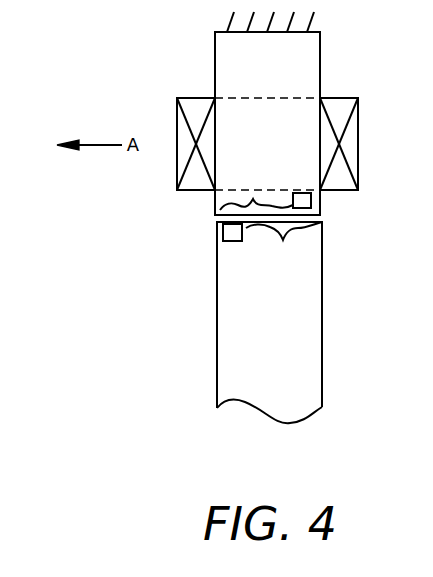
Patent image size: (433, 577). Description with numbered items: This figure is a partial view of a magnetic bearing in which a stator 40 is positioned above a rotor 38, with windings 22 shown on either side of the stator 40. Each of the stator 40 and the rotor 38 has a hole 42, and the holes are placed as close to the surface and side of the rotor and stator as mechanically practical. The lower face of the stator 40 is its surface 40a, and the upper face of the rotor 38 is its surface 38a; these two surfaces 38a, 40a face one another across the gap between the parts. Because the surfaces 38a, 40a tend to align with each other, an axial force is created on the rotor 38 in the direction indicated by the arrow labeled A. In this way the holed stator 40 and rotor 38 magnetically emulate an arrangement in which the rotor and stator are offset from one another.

The windings 22 is at (182, 122).
The rotor 38 is at (280, 380).
The surface of rotor 38a is at (284, 246).
The stator 40 is at (275, 77).
The surface of stator 40a is at (255, 197).
The hole 42 is at (223, 233).